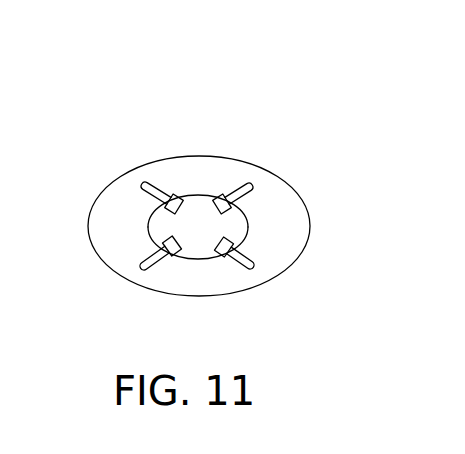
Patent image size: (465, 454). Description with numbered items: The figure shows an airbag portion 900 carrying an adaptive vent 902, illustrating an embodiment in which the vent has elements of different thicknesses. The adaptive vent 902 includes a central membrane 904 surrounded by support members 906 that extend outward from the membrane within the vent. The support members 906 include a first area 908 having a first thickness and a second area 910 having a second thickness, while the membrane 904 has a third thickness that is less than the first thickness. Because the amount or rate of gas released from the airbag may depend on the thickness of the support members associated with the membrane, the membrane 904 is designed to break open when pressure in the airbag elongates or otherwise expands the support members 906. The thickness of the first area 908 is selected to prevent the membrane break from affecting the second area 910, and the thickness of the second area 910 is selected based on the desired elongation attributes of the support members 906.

The airbag portion 900 is at (212, 174).
The adaptive vent 902 is at (282, 215).
The membrane 904 is at (197, 201).
The support members 906 is at (155, 187).
The first area 908 is at (193, 255).
The second area 910 is at (147, 263).